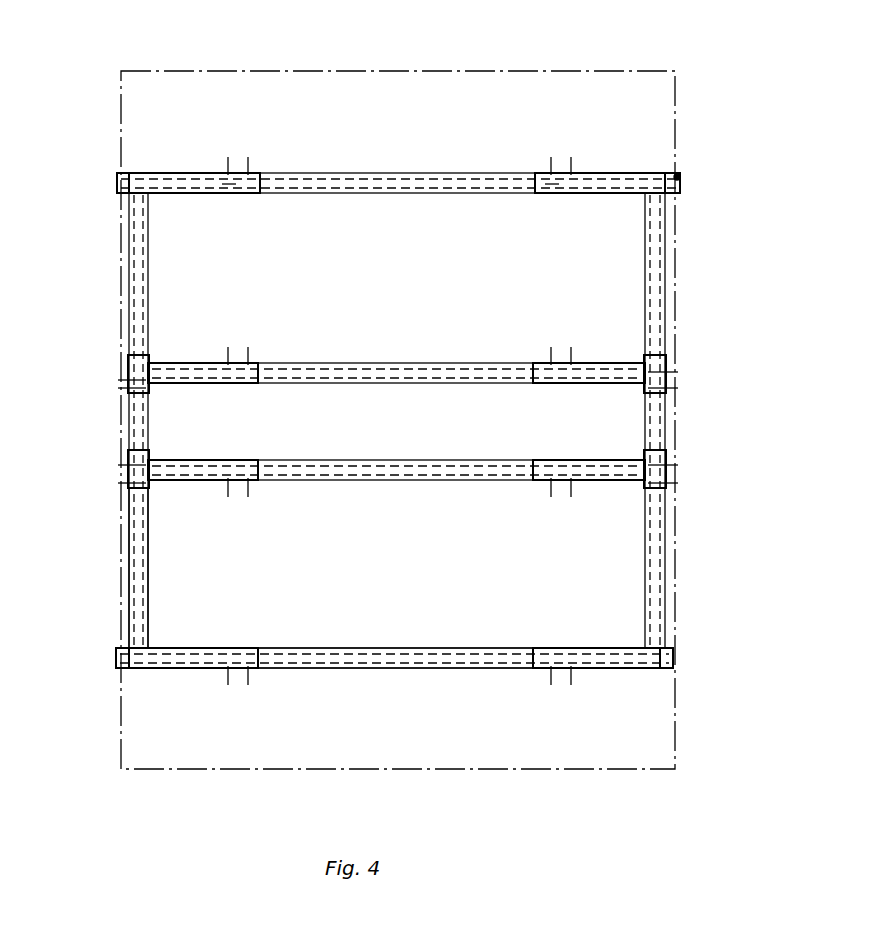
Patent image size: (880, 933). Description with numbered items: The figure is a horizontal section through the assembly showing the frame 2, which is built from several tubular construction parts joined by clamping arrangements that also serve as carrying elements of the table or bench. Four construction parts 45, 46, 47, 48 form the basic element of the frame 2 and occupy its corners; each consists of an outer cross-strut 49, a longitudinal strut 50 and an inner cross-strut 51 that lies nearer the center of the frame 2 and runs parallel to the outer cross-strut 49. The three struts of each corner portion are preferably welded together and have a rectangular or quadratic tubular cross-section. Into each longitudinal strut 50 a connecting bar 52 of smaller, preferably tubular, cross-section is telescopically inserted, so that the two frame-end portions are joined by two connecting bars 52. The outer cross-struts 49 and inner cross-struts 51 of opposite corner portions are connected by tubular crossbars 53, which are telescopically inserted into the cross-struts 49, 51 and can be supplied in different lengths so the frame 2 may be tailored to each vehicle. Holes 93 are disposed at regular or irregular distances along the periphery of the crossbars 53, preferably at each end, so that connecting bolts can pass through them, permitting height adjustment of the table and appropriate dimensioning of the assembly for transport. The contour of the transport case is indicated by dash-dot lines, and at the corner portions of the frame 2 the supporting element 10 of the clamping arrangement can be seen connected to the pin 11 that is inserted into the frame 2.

The frame 2 is at (577, 96).
The supporting element 10 is at (675, 192).
The pin 11 is at (678, 176).
The construction part 45 is at (124, 680).
The construction part 46 is at (108, 172).
The construction part 47 is at (701, 155).
The construction part 48 is at (687, 671).
The outer cross-strut 49 is at (187, 669).
The longitudinal strut 50 is at (138, 573).
The inner cross-strut 51 is at (194, 469).
The connecting bar 52 is at (137, 423).
The crossbar 53 is at (342, 172).
The holes 93 is at (257, 363).